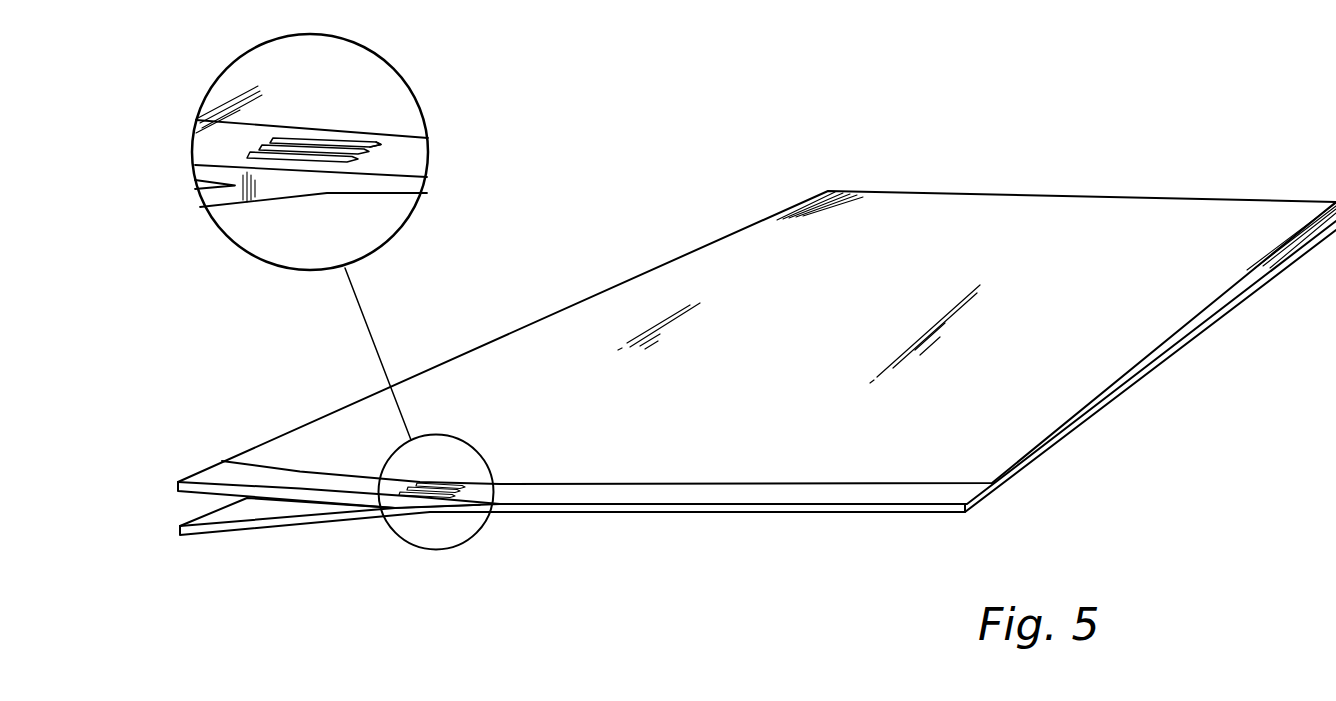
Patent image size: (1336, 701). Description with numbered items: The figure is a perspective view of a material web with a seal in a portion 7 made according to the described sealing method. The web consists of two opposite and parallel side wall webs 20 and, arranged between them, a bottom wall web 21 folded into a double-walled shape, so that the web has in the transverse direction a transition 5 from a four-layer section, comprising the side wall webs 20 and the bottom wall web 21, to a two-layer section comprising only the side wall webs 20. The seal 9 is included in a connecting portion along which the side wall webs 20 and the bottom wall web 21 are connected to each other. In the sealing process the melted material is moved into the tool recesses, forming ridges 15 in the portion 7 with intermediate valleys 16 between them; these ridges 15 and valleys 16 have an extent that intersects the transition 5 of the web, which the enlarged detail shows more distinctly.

The transition 5 is at (294, 219).
The portion 7 is at (452, 471).
The seal 9 is at (481, 492).
The ridges 15 is at (376, 146).
The valleys 16 is at (380, 151).
The side wall webs 20 is at (733, 509).
The bottom wall web 21 is at (177, 484).